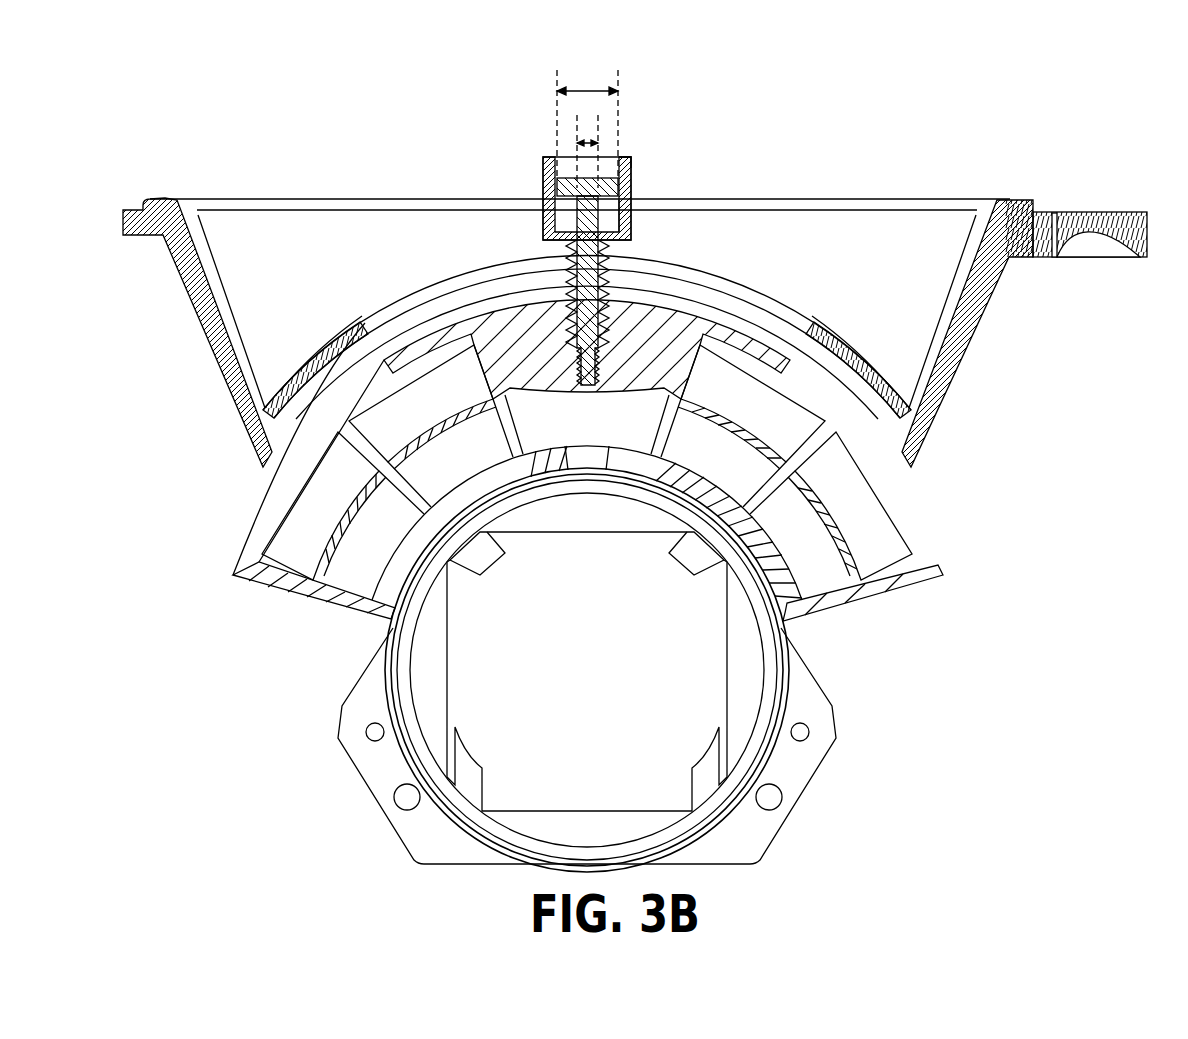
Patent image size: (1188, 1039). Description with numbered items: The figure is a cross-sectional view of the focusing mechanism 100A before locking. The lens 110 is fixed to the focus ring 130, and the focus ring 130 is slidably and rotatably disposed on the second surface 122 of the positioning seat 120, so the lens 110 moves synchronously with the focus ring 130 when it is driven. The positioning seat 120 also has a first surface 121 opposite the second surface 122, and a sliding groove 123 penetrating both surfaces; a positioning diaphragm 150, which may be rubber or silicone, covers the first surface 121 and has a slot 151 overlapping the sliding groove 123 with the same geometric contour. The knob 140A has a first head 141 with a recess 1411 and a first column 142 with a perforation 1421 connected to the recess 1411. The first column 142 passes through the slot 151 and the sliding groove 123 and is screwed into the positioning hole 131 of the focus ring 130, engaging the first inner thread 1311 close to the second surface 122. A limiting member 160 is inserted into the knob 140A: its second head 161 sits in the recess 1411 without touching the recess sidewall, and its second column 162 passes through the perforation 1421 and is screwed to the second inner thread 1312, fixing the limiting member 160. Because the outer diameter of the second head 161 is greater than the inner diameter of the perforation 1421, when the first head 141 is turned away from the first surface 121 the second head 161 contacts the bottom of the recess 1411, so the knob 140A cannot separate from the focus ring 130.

The focusing mechanism 100A is at (1147, 878).
The lens 110 is at (712, 670).
The positioning seat 120 is at (953, 357).
The first surface 121 is at (349, 336).
The second surface 122 is at (302, 418).
The sliding groove 123 is at (767, 285).
The focus ring 130 is at (924, 575).
The positioning hole 131 is at (675, 237).
The first inner thread 1311 is at (893, 383).
The second inner thread 1312 is at (342, 340).
The knob 140A is at (639, 195).
The first head 141 is at (548, 160).
The first column 142 is at (591, 233).
The recess 1411 is at (618, 188).
The perforation 1421 is at (603, 305).
The positioning diaphragm 150 is at (802, 325).
The slot 151 is at (788, 327).
The limiting member 160 is at (691, 134).
The second head 161 is at (627, 165).
The second column 162 is at (612, 217).